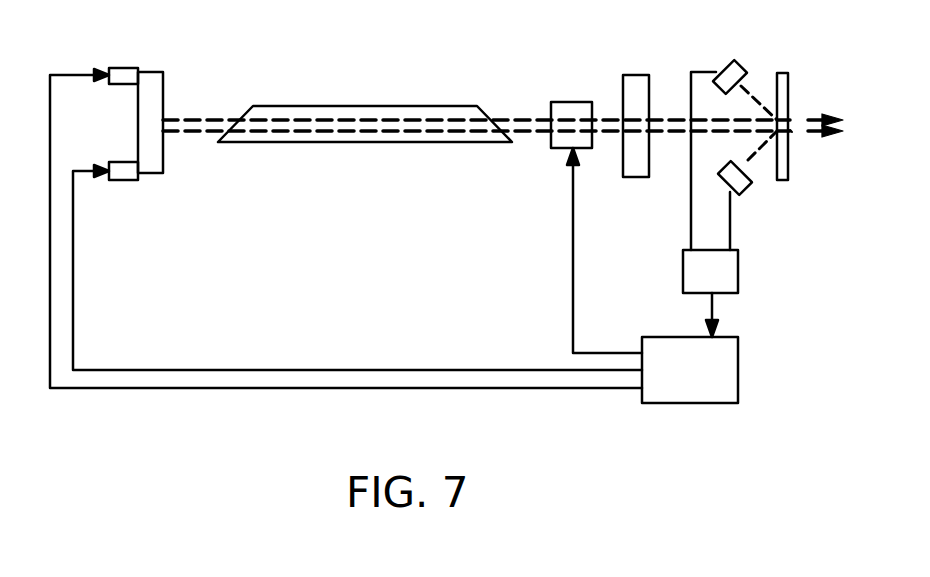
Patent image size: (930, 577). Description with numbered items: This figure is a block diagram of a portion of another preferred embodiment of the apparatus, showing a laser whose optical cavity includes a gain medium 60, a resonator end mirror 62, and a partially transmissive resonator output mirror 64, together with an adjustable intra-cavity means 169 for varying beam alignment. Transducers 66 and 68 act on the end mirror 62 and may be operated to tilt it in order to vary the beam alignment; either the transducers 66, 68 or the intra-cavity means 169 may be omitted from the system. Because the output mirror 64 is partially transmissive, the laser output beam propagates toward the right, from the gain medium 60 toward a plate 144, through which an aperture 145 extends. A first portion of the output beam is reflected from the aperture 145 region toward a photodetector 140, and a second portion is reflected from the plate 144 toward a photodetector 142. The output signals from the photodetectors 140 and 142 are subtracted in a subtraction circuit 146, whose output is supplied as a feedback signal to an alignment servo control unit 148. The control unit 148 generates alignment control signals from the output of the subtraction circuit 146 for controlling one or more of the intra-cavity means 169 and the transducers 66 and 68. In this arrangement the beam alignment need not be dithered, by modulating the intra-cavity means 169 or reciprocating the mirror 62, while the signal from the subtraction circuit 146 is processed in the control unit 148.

The gain medium 60 is at (280, 143).
The resonator end mirror 62 is at (163, 80).
The partially transmissive resonator output mirror 64 is at (640, 73).
The transducer 66 is at (118, 180).
The transducer 68 is at (108, 67).
The photodetector 140 is at (733, 60).
The photodetector 142 is at (745, 190).
The plate 144 is at (790, 85).
The aperture 145 is at (790, 130).
The subtraction circuit 146 is at (683, 275).
The alignment servo control unit 148 is at (742, 373).
The adjustable intra-cavity means for varying beam alignment 169 is at (572, 100).